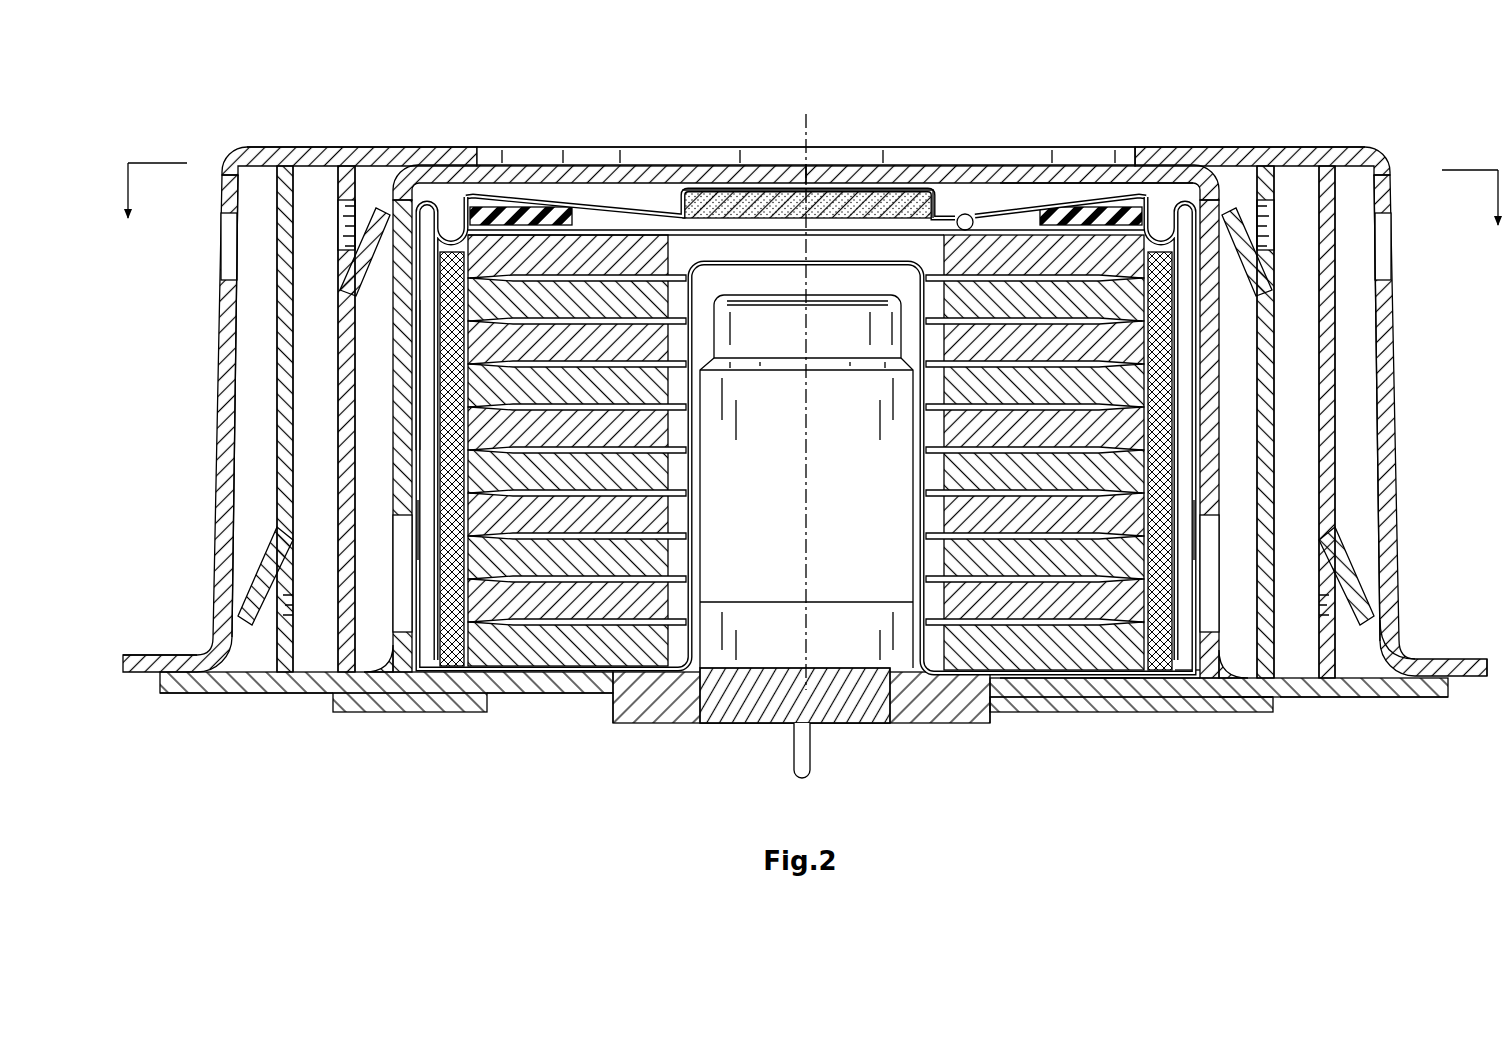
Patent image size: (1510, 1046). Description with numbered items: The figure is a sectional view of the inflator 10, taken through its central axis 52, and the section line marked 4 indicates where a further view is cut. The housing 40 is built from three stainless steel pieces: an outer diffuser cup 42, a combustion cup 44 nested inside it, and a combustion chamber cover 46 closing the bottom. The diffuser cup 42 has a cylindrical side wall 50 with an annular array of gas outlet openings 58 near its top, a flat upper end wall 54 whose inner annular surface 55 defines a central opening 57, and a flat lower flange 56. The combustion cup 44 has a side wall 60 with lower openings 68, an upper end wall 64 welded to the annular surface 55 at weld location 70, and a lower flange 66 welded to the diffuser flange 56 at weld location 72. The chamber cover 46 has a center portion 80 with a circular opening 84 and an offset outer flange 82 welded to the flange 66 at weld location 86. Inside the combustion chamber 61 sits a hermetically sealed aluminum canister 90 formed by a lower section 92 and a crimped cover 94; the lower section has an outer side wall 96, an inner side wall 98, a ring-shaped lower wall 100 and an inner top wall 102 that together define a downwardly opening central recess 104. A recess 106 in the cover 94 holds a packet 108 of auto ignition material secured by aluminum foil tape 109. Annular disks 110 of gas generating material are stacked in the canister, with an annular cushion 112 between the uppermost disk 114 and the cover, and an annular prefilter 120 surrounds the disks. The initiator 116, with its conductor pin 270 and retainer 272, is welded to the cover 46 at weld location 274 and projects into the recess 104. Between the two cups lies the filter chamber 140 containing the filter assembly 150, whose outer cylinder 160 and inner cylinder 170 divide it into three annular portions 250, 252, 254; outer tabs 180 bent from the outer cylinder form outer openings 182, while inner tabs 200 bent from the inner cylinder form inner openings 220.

The inflator 10 is at (348, 124).
The housing 40 is at (305, 697).
The diffuser cup 42 is at (133, 660).
The combustion cup 44 is at (253, 697).
The combustion chamber cover 46 is at (373, 716).
The side wall 50 is at (236, 430).
The central axis 52 is at (806, 114).
The upper end wall 54 is at (1265, 152).
The inner annular surface 55 is at (476, 158).
The lower flange 56 is at (1452, 660).
The central opening 57 is at (633, 162).
The gas outlet openings 58 is at (221, 248).
The side wall 60 is at (399, 452).
The combustion chamber 61 is at (419, 528).
The upper end wall 64 is at (1083, 175).
The lower flange 66 is at (1342, 697).
The openings 68 is at (1213, 575).
The weld location 70 is at (1140, 158).
The weld location 72 is at (1456, 682).
The center portion 80 is at (1115, 678).
The outer flange 82 is at (1232, 697).
The circular opening 84 is at (913, 682).
The weld location 86 is at (1275, 700).
The canister 90 is at (1025, 205).
The canister lower section 92 is at (921, 463).
The canister cover 94 is at (1000, 214).
The outer side wall 96 is at (440, 612).
The inner side wall 98 is at (926, 352).
The lower wall 100 is at (1112, 690).
The inner top wall 102 is at (760, 262).
The central recess 104 is at (790, 283).
The recess 106 is at (884, 200).
The packet of auto ignition material 108 is at (755, 210).
The aluminum foil tape 109 is at (968, 213).
The annular disks of gas generating material 110 is at (990, 648).
The annular cushion 112 is at (1112, 210).
The uppermost gas generating disk 114 is at (545, 255).
The initiator 116 is at (600, 740).
The prefilter 120 is at (1187, 652).
The filter chamber 140 is at (262, 180).
The filter assembly 150 is at (320, 180).
The outer cylinder 160 is at (274, 510).
The inner cylinder 170 is at (333, 481).
The outer tab 180 is at (262, 574).
The outer opening 182 is at (283, 602).
The inner tab 200 is at (352, 262).
The inner opening 220 is at (350, 240).
The first filter chamber portion 250 is at (375, 400).
The second filter chamber portion 252 is at (315, 378).
The third filter chamber portion 254 is at (257, 350).
The conductor pin 270 is at (800, 745).
The retainer 272 is at (657, 726).
The weld location 274 is at (1000, 700).
The section line 4 is at (813, 213).